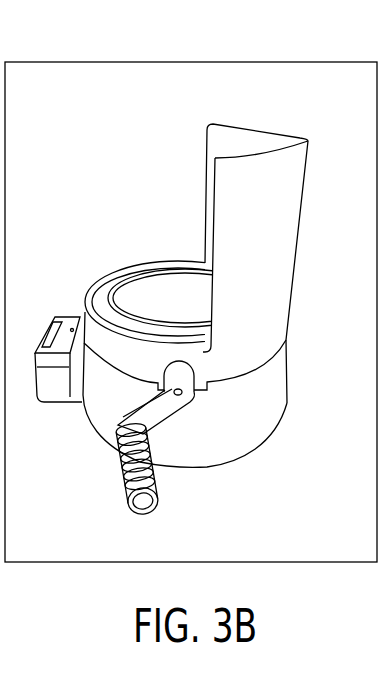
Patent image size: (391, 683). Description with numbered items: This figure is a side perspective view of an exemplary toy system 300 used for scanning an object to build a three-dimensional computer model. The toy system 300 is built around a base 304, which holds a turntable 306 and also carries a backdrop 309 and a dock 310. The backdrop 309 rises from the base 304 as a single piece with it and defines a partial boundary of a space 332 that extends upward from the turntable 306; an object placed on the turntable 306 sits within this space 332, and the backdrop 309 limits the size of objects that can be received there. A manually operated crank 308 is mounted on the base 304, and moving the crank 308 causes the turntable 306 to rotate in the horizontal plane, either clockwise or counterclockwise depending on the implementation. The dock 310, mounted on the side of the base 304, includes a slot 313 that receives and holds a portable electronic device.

The toy system 300 is at (50, 97).
The base 304 is at (262, 444).
The turntable 306 is at (195, 312).
The crank 308 is at (150, 524).
The backdrop 309 is at (287, 115).
The dock 310 is at (65, 412).
The slot 313 is at (63, 308).
The space 332 is at (178, 211).